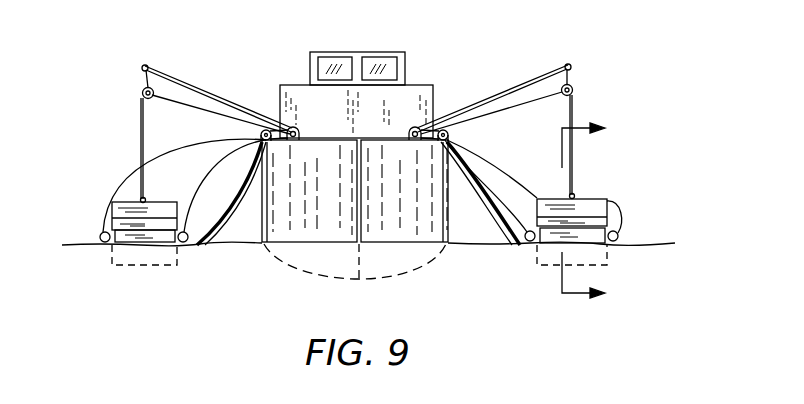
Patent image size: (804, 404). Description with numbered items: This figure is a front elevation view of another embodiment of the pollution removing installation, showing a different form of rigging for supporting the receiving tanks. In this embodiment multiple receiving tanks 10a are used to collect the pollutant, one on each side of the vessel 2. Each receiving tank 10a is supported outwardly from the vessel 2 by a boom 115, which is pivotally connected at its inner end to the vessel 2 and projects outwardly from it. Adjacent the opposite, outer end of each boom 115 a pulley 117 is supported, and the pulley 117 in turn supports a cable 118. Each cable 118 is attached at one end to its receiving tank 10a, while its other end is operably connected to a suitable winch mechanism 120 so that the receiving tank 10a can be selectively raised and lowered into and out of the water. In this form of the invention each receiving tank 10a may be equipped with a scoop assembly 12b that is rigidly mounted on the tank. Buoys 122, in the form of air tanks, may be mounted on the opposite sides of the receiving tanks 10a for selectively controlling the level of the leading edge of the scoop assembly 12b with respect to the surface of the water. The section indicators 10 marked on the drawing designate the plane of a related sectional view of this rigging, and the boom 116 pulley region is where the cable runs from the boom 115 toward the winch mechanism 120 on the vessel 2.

The vessel 2 is at (283, 84).
The section line 10 is at (597, 211).
The receiving tank 10a is at (162, 203).
The scoop assembly 12b is at (141, 245).
The boom 115 is at (193, 86).
The boom pulley 116 is at (266, 141).
The pulley 117 is at (145, 88).
The cable 118 is at (141, 117).
The winch mechanism 120 is at (296, 128).
The buoys 122 is at (101, 243).